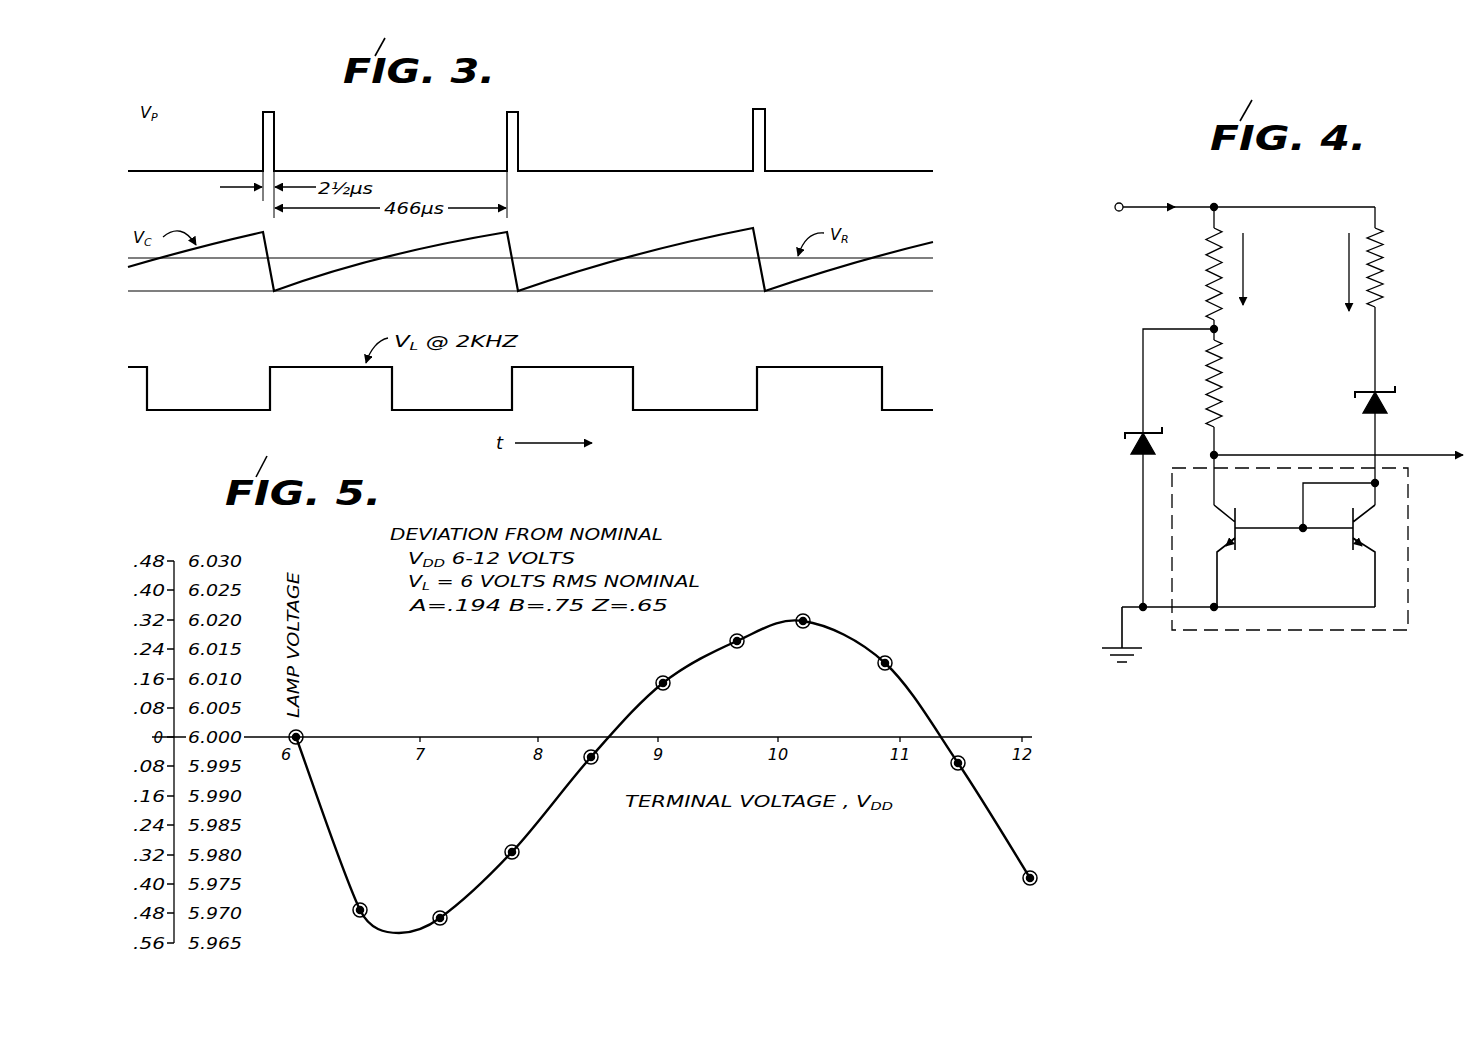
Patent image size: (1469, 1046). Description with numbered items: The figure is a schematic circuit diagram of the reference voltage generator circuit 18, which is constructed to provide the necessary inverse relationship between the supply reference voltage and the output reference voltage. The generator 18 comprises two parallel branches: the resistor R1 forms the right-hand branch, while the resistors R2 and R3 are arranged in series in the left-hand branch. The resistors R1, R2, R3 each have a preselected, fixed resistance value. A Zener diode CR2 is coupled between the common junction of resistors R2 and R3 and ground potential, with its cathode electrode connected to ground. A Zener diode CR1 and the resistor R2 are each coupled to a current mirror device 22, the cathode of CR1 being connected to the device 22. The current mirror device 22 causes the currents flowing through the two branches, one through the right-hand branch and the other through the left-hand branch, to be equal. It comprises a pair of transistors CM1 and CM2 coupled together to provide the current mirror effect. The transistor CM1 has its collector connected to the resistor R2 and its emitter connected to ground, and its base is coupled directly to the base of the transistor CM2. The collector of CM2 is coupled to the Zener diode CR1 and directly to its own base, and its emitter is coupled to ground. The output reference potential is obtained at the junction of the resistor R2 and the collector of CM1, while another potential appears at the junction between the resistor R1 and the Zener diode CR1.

The reference voltage generator circuit 18 is at (1103, 294).
The current mirror device 22 is at (1381, 631).
The resistor R1 is at (1389, 299).
The resistor R2 is at (1196, 422).
The resistor R3 is at (1192, 273).
The Zener diode CR1 is at (1388, 445).
The Zener diode CR2 is at (1128, 432).
The current mirror transistor CM1 is at (1244, 543).
The current mirror transistor CM2 is at (1347, 543).